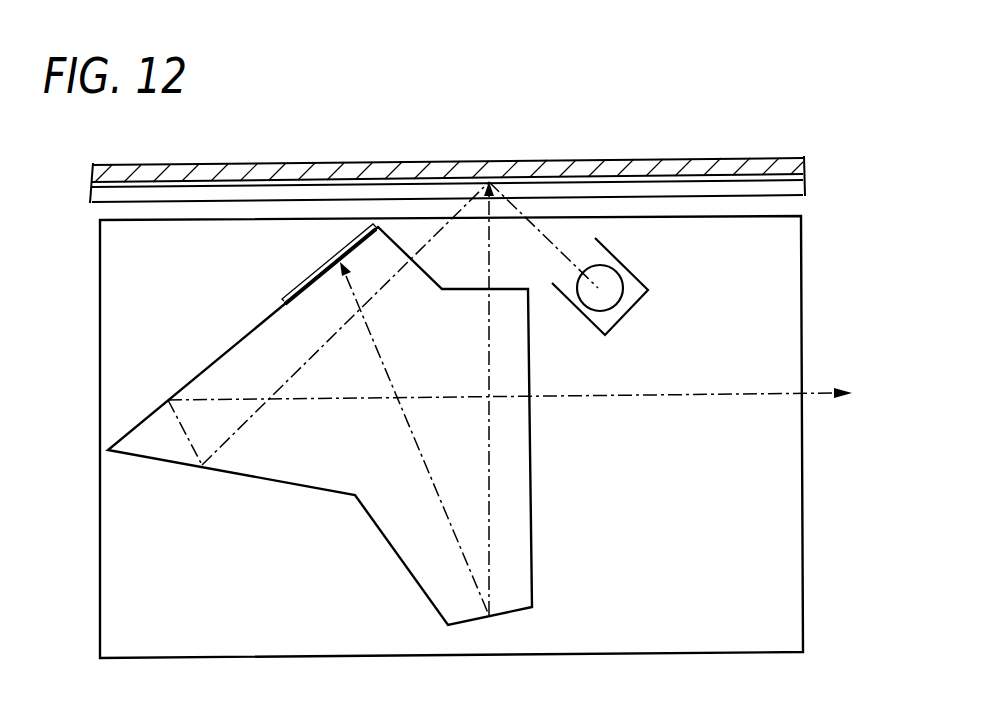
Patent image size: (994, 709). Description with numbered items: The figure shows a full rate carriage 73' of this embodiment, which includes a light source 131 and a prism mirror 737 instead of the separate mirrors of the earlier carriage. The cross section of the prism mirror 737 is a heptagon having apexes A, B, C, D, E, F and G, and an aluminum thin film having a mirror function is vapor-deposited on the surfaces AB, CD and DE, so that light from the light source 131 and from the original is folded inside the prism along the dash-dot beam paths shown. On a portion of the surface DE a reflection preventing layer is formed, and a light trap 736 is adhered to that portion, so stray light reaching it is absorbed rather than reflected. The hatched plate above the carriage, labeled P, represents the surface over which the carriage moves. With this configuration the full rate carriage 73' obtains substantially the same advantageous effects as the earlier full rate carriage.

The light trap 736 is at (338, 261).
The prism mirror 737 is at (251, 507).
The light source 131 is at (622, 260).
The full rate carriage 73' is at (503, 437).
The photosensitive member P is at (803, 167).